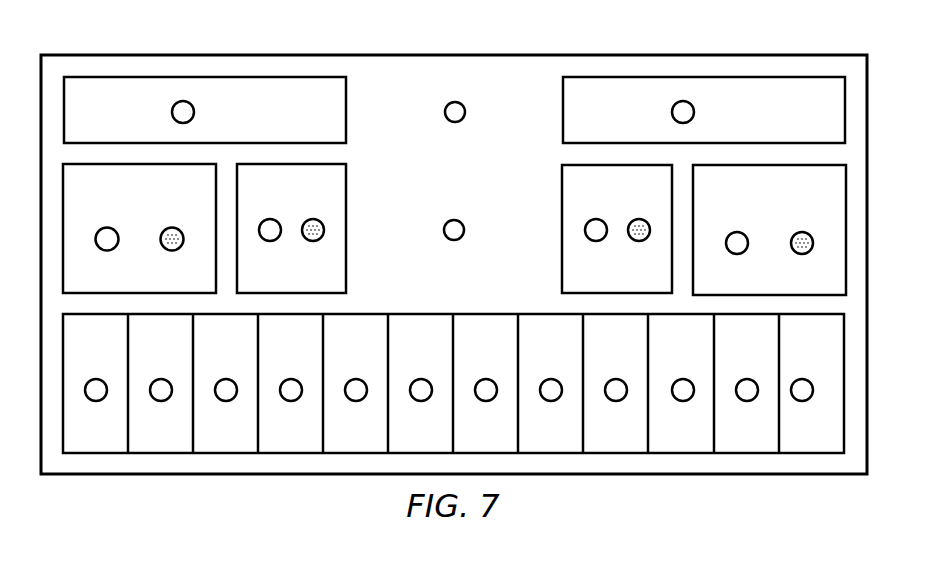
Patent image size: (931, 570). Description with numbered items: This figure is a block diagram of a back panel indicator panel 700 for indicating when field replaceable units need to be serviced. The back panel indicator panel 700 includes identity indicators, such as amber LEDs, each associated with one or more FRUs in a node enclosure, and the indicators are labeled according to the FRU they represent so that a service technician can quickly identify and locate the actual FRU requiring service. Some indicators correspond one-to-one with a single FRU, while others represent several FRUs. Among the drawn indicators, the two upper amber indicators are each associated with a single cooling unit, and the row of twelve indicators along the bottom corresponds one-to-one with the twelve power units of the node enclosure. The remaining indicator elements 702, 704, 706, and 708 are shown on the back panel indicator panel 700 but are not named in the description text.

The back panel indicator panel 700 is at (655, 52).
The power indicator P1 702 is at (465, 232).
The port indicator 704 is at (176, 228).
The port indicator 706 is at (104, 228).
The slot indicator E12 708 is at (804, 378).